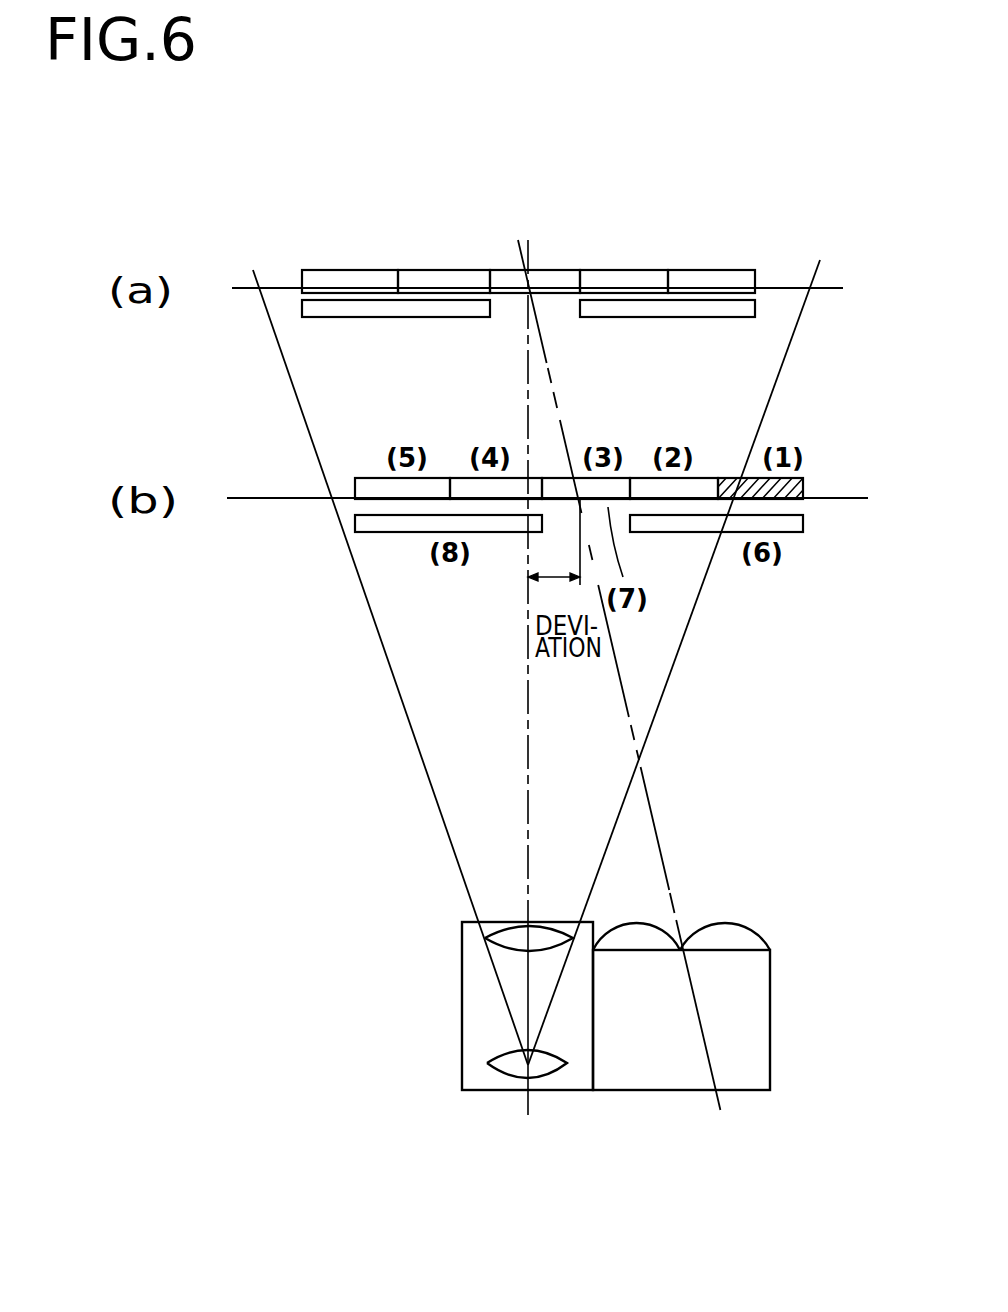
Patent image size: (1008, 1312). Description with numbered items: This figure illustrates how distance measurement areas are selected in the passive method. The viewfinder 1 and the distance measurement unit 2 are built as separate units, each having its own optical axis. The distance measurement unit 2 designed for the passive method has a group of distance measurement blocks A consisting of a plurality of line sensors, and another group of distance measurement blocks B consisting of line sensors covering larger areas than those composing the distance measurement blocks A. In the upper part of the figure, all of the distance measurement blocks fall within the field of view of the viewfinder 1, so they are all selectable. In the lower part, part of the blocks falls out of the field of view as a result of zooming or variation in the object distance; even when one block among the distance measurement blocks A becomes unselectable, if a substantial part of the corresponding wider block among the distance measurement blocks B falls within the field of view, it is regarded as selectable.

The viewfinder 1 is at (462, 1010).
The distance measurement unit 2 is at (770, 1007).
The distance measurement blocks A is at (757, 245).
The distance measurement blocks B is at (428, 308).